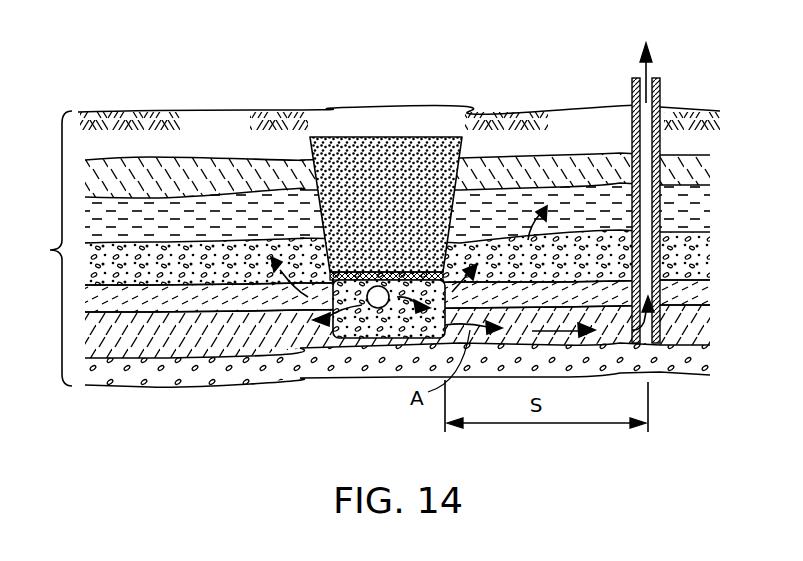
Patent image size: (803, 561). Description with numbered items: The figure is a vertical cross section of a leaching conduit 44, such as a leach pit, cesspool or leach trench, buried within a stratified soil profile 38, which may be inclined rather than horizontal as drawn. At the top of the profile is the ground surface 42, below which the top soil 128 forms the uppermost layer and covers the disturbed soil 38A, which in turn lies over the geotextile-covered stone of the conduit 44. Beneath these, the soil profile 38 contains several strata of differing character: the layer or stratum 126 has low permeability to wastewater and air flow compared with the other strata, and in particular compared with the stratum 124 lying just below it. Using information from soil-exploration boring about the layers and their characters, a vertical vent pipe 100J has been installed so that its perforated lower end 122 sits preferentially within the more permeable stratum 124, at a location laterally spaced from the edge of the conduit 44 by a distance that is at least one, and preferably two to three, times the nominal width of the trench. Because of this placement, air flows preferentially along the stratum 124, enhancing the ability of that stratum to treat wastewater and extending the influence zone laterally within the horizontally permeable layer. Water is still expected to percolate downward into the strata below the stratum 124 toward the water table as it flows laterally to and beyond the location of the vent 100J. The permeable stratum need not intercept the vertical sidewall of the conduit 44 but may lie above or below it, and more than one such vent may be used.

The stratified soil profile 38 is at (371, 227).
The disturbed soil 38A is at (378, 157).
The ground surface 42 is at (207, 110).
The conduit 44 is at (358, 340).
The vertical vent pipe 100J is at (632, 90).
The perforated lower end 122 is at (645, 328).
The stratum 124 is at (207, 348).
The layer or stratum 126 is at (207, 308).
The top soil 128 is at (237, 143).